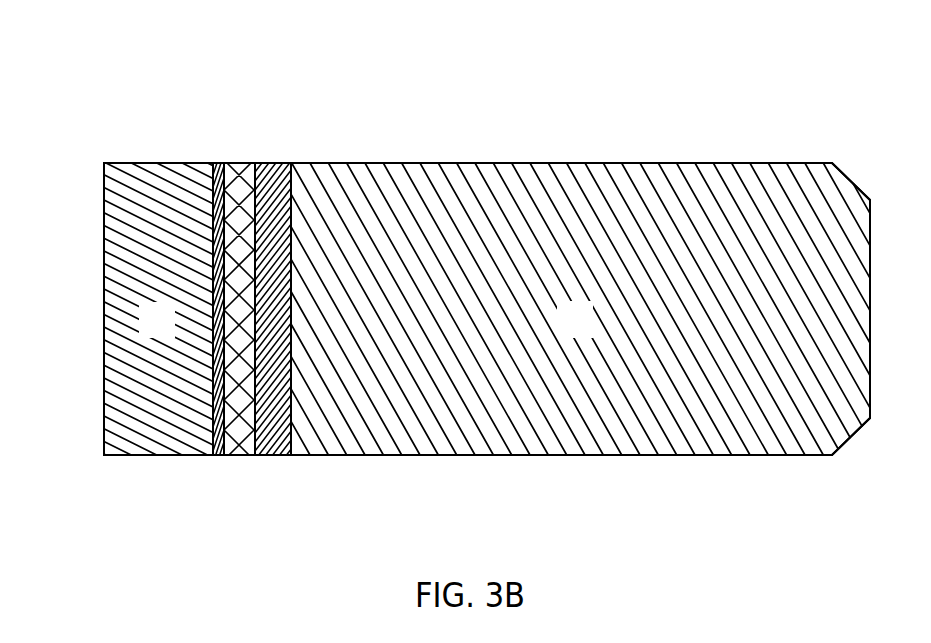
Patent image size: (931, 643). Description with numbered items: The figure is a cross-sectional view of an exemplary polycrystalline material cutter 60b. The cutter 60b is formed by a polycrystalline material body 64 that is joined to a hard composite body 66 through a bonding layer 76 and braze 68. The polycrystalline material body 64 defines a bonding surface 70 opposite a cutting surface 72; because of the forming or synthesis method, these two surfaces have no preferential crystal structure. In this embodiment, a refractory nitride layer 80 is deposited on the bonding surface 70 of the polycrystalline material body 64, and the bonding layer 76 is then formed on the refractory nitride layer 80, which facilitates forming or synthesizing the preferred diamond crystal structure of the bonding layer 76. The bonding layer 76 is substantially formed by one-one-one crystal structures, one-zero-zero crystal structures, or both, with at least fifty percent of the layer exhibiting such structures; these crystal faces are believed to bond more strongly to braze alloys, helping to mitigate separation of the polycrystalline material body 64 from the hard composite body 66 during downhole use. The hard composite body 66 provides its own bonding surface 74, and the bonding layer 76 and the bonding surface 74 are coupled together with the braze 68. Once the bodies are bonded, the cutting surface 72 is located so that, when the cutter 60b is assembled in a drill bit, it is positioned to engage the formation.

The cutter 60b is at (118, 76).
The polycrystalline material body 64 is at (143, 333).
The hard composite body 66 is at (562, 332).
The braze 68 is at (286, 447).
The bonding surface 70 is at (219, 163).
The cutting surface 72 is at (104, 213).
The bonding surface 74 is at (287, 163).
The bonding layer 76 is at (242, 447).
The refractory nitride layer 80 is at (219, 455).